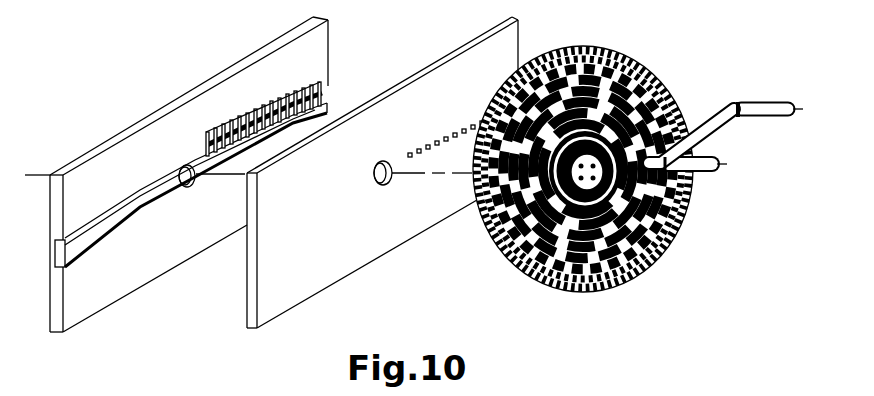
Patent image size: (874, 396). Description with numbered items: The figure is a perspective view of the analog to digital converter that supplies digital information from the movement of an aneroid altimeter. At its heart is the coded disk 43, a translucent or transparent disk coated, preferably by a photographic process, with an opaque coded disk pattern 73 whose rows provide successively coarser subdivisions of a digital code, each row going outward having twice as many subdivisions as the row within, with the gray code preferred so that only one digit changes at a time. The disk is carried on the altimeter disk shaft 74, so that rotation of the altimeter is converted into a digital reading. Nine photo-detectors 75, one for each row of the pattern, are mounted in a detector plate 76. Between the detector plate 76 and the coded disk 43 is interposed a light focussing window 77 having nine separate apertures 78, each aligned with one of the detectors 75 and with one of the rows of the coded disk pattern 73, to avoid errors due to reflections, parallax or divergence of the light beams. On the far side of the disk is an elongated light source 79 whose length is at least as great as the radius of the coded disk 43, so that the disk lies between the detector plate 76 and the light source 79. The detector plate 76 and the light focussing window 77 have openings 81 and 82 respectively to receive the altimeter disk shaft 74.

The coded disk 43 is at (588, 293).
The coded disk pattern 73 is at (665, 238).
The altimeter disk shaft 74 is at (36, 174).
The photo-detectors 75 is at (328, 103).
The detector plate 76 is at (92, 306).
The light focussing window 77 is at (313, 285).
The apertures 78 is at (447, 130).
The elongated light source 79 is at (722, 108).
The opening 81 is at (193, 187).
The opening 82 is at (389, 186).